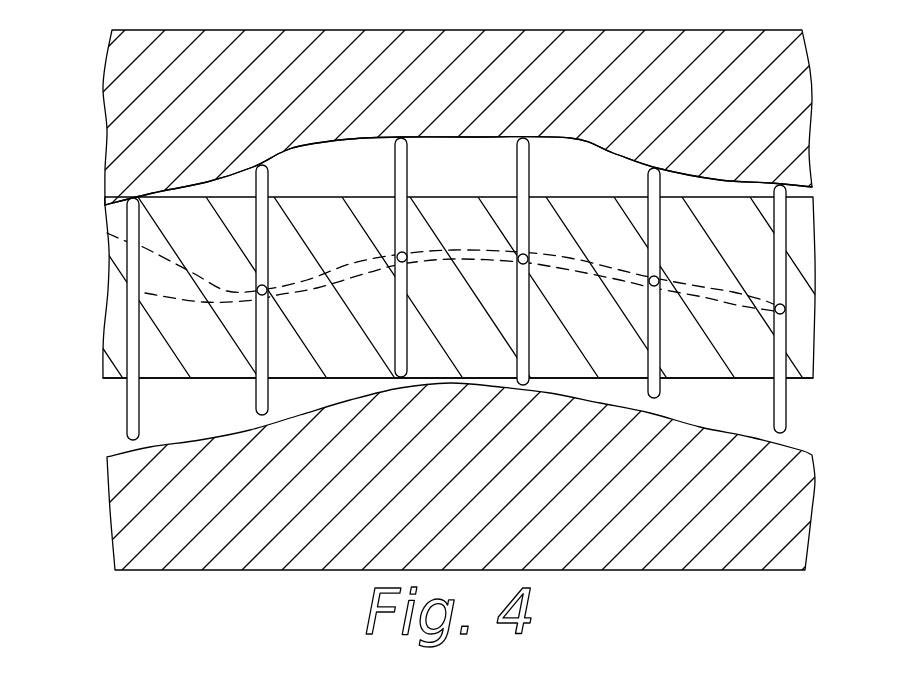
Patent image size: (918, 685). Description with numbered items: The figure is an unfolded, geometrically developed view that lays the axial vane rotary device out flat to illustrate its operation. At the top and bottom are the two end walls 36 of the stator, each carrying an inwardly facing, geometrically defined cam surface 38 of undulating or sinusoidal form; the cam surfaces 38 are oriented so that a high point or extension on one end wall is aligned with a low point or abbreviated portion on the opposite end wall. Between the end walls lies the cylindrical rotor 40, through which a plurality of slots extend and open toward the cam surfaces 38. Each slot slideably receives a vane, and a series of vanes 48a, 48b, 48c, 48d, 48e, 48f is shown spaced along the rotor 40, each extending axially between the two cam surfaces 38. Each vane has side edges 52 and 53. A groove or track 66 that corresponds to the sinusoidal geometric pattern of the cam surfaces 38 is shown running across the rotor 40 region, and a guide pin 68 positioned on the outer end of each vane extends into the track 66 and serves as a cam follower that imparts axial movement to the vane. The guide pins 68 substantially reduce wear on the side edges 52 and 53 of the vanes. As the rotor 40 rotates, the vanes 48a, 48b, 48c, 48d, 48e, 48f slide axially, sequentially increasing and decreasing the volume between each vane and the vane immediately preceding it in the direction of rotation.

The end wall 36 is at (808, 85).
The cam surface 38 is at (717, 437).
The rotor 40 is at (486, 300).
The vane 48a is at (128, 318).
The vane 48b is at (270, 176).
The vane 48c is at (396, 187).
The vane 48d is at (529, 177).
The vane 48e is at (648, 183).
The vane 48f is at (787, 216).
The side edge 52 is at (256, 166).
The side edge 53 is at (257, 420).
The track 66 is at (97, 233).
The guide pin 68 is at (785, 306).